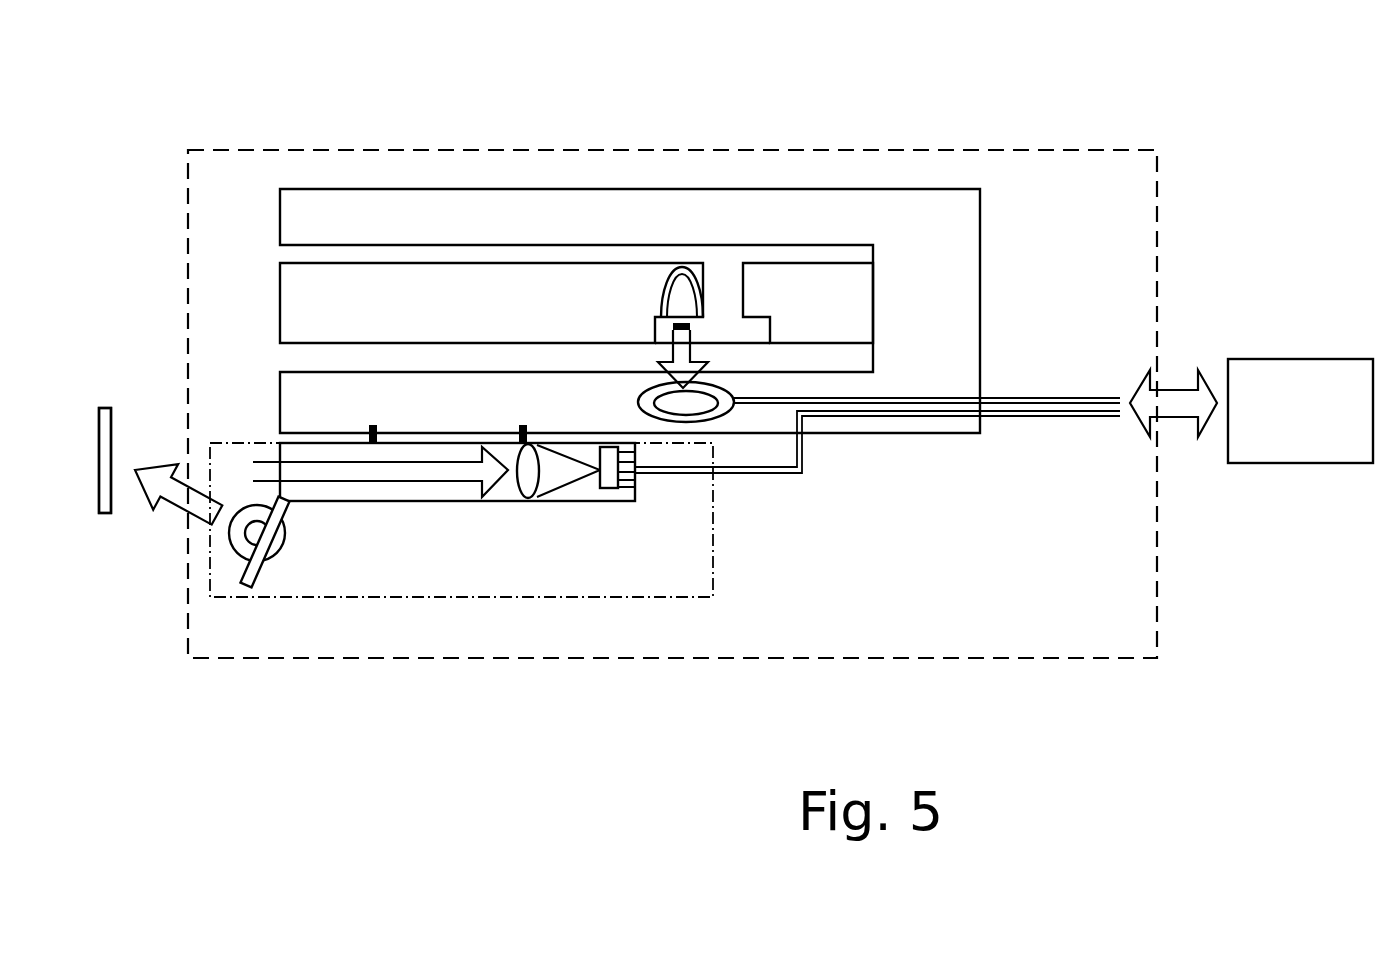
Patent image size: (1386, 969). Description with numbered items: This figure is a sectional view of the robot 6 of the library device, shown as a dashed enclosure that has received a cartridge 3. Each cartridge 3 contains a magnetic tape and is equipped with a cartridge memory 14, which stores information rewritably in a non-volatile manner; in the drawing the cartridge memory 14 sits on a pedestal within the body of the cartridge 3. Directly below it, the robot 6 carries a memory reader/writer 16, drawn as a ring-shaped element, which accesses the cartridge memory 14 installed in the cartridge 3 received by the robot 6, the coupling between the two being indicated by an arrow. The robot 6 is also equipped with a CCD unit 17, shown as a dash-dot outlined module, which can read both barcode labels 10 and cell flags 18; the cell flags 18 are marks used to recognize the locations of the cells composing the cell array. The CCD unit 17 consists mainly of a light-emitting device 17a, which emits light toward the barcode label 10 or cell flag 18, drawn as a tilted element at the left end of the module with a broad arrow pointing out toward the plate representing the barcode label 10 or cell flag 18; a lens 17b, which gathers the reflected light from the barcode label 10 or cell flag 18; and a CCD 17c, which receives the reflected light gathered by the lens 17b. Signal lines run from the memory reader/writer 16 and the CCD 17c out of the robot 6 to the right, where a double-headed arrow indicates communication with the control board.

The cartridge 3 is at (280, 300).
The robot 6 is at (953, 150).
The barcode label 10 is at (132, 416).
The cell flag 18 is at (112, 437).
The cartridge memory 14 is at (661, 294).
The memory reader/writer 16 is at (720, 420).
The CCD unit 17 is at (555, 598).
The light-emitting device 17a is at (240, 566).
The lens 17b is at (514, 488).
The CCD 17c is at (608, 490).